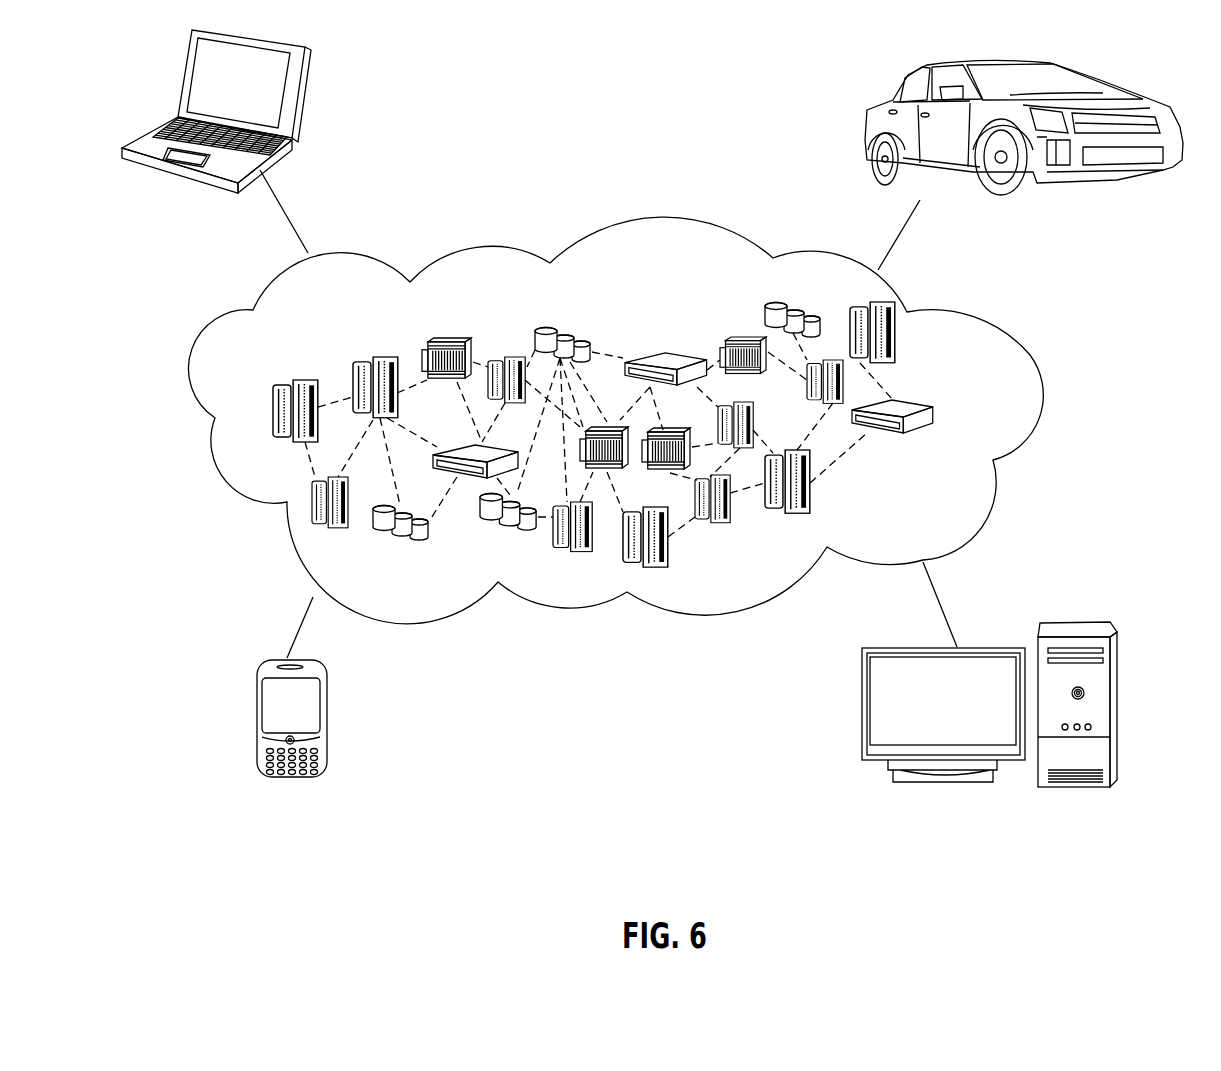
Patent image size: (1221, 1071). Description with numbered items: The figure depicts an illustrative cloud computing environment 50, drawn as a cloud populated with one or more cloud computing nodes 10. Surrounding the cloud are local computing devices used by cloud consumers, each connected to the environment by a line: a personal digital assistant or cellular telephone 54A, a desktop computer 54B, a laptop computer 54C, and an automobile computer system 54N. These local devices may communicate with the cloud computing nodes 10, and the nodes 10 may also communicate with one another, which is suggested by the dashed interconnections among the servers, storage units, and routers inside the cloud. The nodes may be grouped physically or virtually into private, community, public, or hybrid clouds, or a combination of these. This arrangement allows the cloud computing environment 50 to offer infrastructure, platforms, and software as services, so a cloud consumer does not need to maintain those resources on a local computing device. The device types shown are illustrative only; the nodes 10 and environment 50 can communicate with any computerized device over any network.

The cloud computing environment 50 is at (1002, 327).
The cloud computing nodes 10 is at (1004, 408).
The personal digital assistant or cellular telephone 54A is at (257, 722).
The desktop computer 54B is at (1080, 620).
The laptop computer 54C is at (297, 100).
The automobile computer system 54N is at (873, 110).